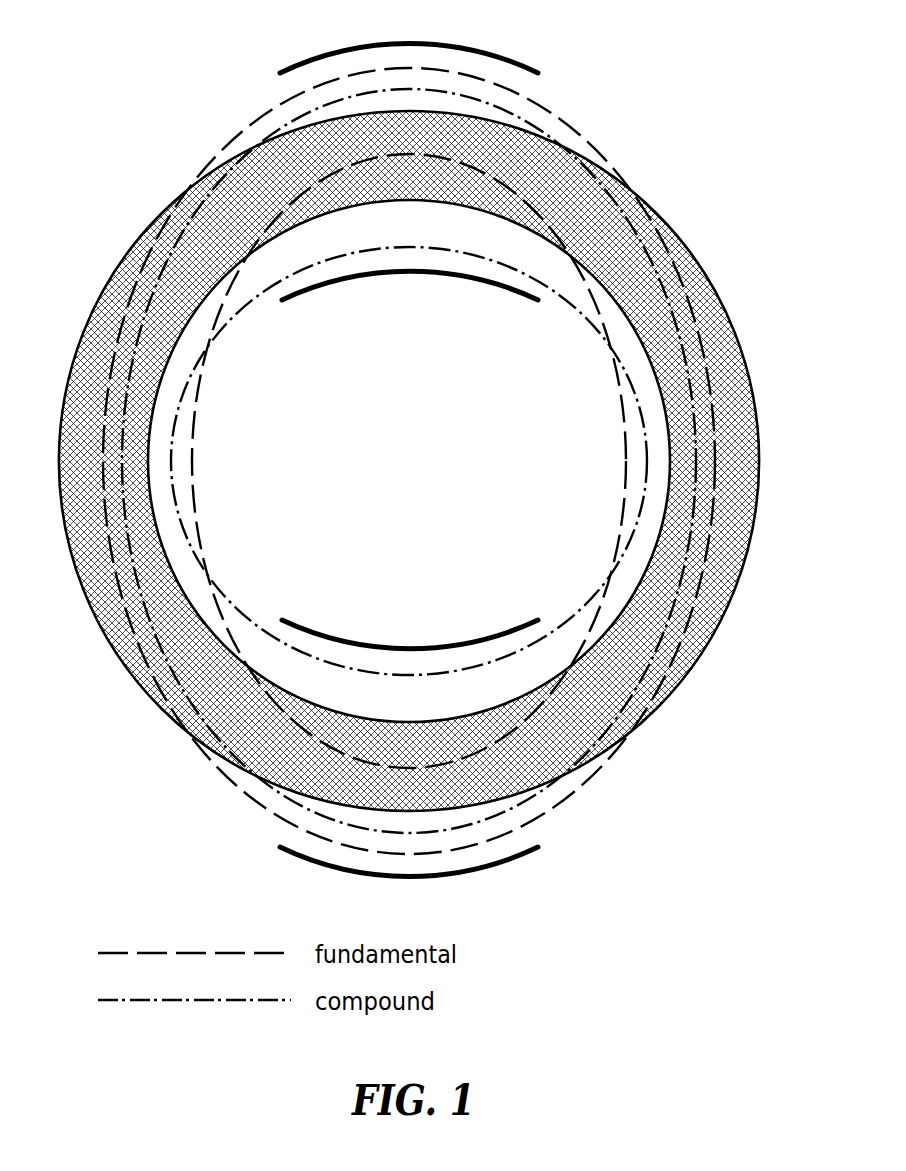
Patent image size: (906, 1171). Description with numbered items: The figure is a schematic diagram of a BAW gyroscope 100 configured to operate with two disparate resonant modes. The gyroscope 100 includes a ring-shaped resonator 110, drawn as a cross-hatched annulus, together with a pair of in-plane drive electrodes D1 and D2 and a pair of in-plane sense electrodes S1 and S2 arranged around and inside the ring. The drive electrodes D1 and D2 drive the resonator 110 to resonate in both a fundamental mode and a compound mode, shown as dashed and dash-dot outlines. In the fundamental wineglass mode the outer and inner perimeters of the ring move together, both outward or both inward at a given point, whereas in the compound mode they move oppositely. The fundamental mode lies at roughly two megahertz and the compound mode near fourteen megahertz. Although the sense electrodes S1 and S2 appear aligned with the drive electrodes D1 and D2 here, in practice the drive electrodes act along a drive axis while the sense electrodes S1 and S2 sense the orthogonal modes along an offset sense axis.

The BAW gyroscope 100 is at (420, 479).
The ring-shaped resonator 110 is at (723, 302).
The in-plane drive electrode D1 is at (409, 39).
The in-plane drive electrode D2 is at (410, 291).
The in-plane sense electrode S1 is at (410, 630).
The in-plane sense electrode S2 is at (409, 881).